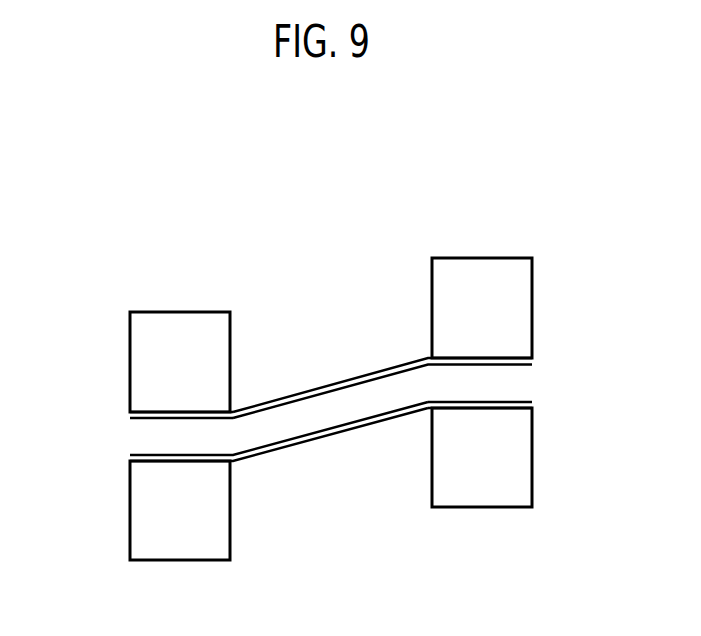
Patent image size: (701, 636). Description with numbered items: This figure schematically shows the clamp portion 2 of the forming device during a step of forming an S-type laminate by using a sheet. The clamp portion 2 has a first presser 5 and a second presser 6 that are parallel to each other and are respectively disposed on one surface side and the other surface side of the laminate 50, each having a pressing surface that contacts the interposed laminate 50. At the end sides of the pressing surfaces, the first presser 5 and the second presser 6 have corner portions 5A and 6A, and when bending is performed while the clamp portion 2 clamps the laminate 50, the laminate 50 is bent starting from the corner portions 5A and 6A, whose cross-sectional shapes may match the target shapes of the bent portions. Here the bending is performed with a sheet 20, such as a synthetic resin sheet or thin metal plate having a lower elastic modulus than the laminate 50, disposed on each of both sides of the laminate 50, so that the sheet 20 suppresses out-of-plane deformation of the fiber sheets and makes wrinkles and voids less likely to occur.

The clamp portion 2 is at (333, 360).
The first presser 5 is at (130, 345).
The second presser 6 is at (130, 520).
The corner portion 5A is at (220, 410).
The corner portion 6A is at (428, 415).
The sheet 20 is at (340, 385).
The laminate 50 is at (284, 434).